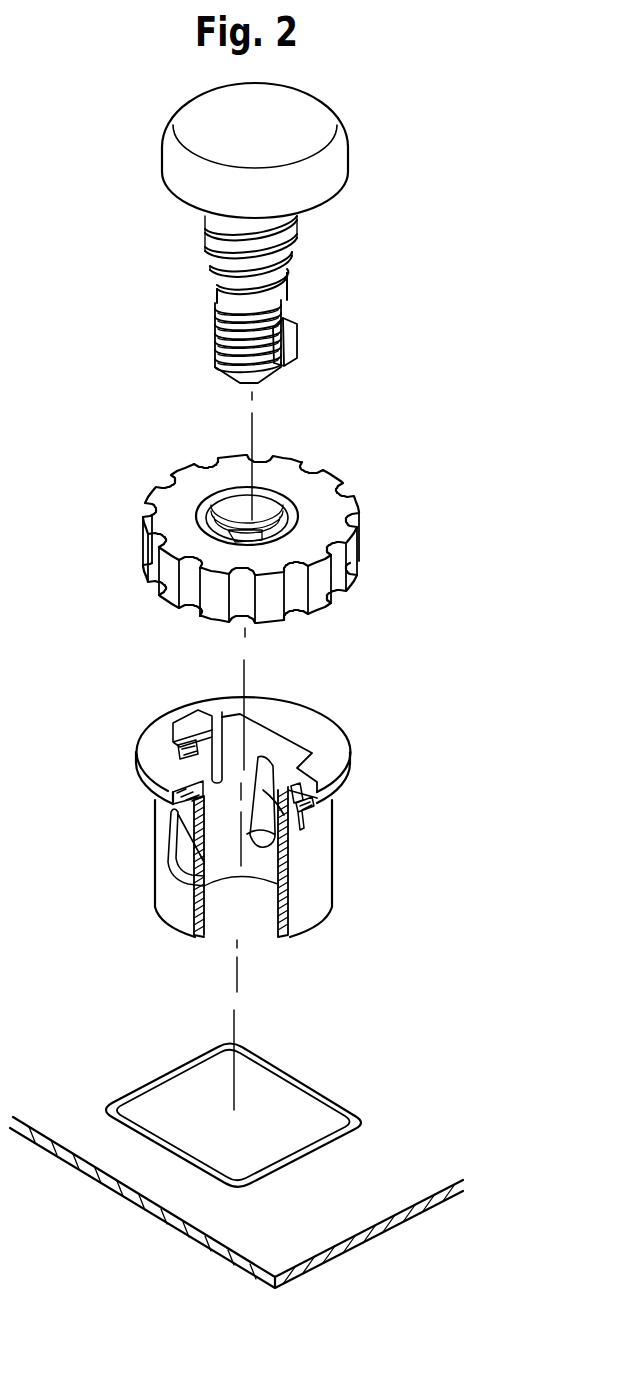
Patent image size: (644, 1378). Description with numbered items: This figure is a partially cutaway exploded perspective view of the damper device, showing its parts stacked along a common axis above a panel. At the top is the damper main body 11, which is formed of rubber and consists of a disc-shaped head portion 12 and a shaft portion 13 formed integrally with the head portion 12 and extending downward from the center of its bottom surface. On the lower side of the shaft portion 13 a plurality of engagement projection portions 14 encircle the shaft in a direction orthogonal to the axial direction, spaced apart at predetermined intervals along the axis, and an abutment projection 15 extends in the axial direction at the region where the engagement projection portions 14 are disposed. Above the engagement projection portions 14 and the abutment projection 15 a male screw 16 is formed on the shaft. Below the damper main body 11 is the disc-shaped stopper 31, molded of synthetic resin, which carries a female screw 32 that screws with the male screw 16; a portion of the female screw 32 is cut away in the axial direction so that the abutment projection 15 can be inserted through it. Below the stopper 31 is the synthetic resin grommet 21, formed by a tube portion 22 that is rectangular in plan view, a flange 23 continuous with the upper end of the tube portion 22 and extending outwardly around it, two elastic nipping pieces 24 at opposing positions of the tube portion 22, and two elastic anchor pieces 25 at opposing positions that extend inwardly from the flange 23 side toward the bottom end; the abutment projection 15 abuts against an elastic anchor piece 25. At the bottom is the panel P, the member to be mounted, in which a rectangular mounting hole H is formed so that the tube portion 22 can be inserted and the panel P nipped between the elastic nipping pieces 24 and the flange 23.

The damper main body 11 is at (237, 233).
The head portion 12 is at (313, 128).
The shaft portion 13 is at (277, 287).
The engagement projection portions 14 is at (214, 347).
The abutment projection 15 is at (290, 345).
The male screw 16 is at (300, 253).
The grommet 21 is at (261, 826).
The tube portion 22 is at (320, 885).
The flange 23 is at (307, 723).
The elastic nipping pieces 24 is at (179, 757).
The elastic anchor pieces 25 is at (190, 848).
The stopper 31 is at (285, 528).
The female screw 32 is at (270, 507).
The mounting hole H is at (153, 1110).
The panel P is at (93, 1147).